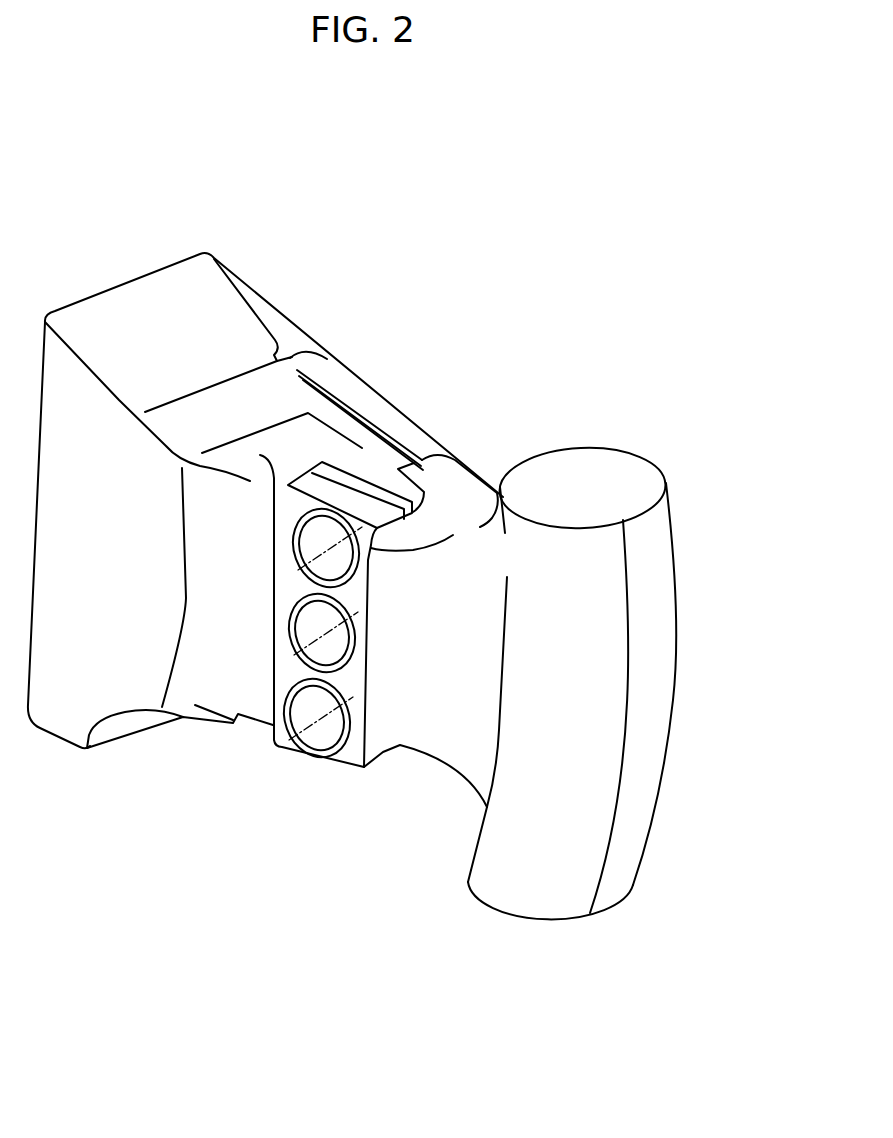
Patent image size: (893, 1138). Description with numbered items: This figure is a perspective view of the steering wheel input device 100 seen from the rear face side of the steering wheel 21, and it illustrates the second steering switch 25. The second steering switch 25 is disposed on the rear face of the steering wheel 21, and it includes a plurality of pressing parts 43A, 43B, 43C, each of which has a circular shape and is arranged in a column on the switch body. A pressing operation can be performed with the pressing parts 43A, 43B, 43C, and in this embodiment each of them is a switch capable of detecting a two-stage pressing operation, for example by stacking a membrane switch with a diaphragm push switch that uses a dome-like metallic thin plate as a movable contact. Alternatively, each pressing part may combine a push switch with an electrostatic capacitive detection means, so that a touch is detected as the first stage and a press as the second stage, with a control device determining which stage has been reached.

The steering wheel input device 100 is at (678, 152).
The steering wheel 21 is at (593, 642).
The second steering switch 25 is at (380, 890).
The pressing part 43A is at (323, 558).
The pressing part 43B is at (322, 640).
The pressing part 43C is at (318, 724).